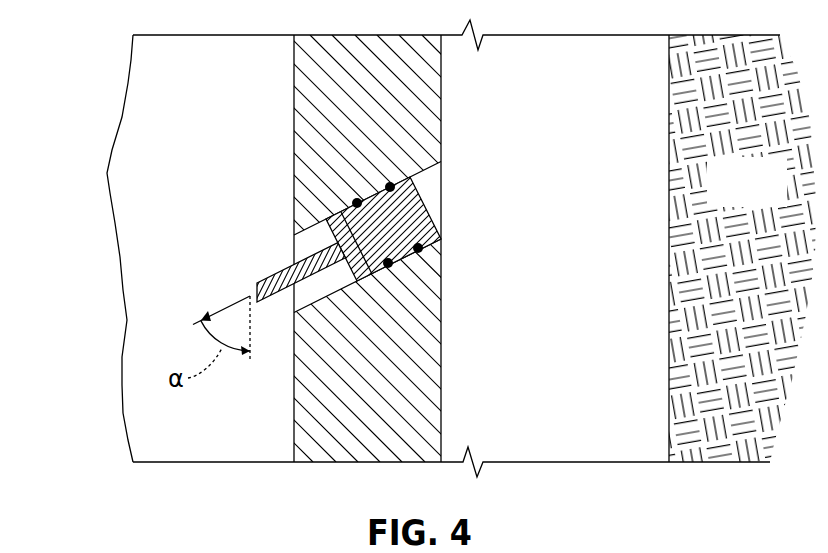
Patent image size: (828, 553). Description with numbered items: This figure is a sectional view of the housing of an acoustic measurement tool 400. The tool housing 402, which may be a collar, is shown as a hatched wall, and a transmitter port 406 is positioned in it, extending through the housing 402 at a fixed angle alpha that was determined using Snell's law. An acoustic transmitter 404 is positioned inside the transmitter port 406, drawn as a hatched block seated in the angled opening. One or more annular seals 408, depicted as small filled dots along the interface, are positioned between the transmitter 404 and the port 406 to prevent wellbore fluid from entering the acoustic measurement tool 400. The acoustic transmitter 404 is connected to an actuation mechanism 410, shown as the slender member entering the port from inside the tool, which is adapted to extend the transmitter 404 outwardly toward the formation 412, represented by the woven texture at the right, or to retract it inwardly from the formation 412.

The acoustic measurement tool 400 is at (468, 324).
The tool housing 402 is at (293, 118).
The acoustic transmitter 404 is at (422, 207).
The transmitter port 406 is at (436, 178).
The annular seals 408 is at (357, 203).
The actuation mechanism 410 is at (270, 277).
The formation 412 is at (773, 202).